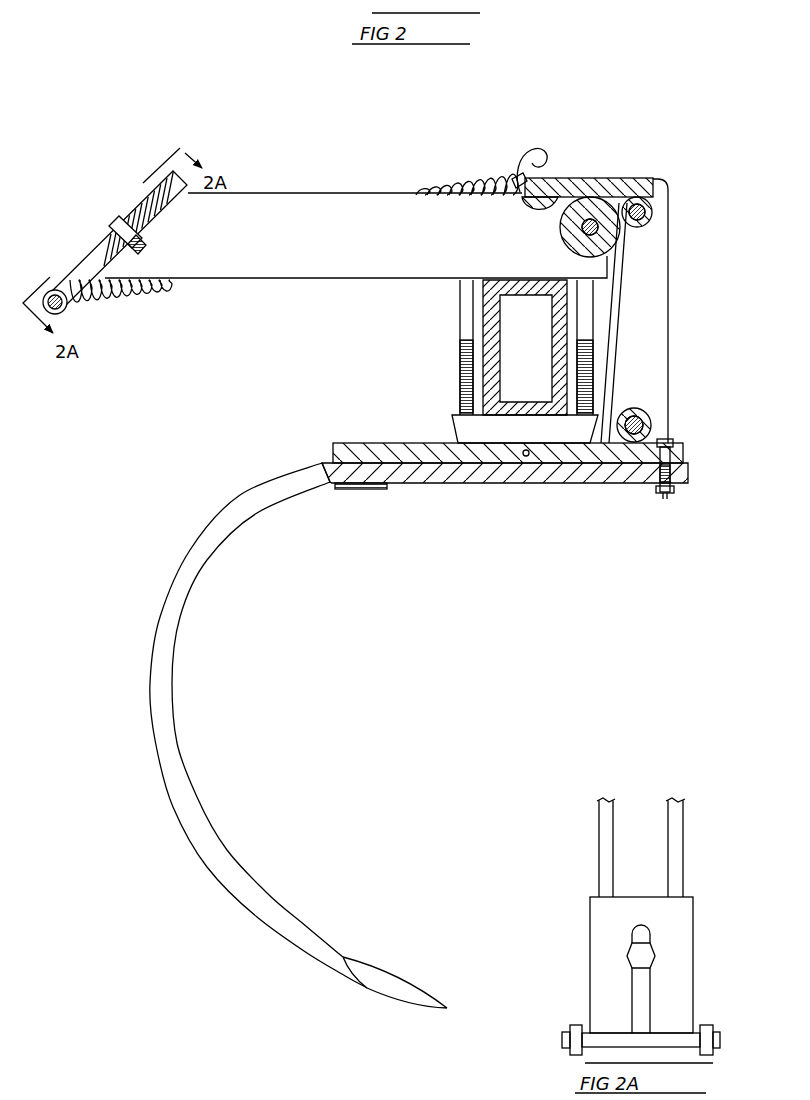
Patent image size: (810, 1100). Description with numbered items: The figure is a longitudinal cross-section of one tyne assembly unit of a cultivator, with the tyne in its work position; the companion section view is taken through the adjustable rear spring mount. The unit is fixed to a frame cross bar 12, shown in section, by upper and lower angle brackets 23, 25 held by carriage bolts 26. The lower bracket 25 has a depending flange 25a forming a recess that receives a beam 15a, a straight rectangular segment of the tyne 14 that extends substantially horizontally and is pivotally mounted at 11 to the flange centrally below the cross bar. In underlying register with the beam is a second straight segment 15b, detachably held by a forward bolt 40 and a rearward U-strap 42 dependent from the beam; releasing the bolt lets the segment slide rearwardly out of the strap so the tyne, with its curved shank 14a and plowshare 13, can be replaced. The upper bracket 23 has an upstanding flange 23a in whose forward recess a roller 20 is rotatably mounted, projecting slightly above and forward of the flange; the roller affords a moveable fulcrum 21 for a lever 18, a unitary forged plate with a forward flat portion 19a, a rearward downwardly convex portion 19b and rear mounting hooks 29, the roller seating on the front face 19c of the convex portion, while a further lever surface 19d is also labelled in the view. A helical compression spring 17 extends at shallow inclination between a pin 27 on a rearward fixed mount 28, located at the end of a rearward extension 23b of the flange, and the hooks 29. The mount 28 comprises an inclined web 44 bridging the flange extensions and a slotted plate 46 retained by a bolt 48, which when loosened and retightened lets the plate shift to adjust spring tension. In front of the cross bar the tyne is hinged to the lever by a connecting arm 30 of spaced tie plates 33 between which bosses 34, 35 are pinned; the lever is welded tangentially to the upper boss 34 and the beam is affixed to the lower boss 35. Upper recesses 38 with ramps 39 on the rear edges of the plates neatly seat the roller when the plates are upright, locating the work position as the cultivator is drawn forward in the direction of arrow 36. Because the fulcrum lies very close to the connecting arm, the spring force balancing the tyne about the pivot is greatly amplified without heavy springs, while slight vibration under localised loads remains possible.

The pivot 11 is at (526, 457).
The cross bar 12 is at (487, 375).
The plowshare 13 is at (403, 987).
The tyne 14 is at (309, 735).
The curved shank 14a is at (172, 632).
The beam 15a is at (357, 452).
The second straight elongate segment 15b is at (438, 477).
The helical compression spring 17 is at (160, 283).
The lever 18 is at (583, 177).
The forward flat portion 19a is at (622, 197).
The rearward downwardly convex portion 19b is at (540, 213).
The front face 19c is at (563, 207).
The cam surface 19d is at (531, 202).
The roller 20 is at (613, 233).
The moveable fulcrum 21 is at (597, 177).
The angle bracket 23 is at (560, 180).
The upstanding flange 23a is at (507, 260).
The rearward extension 23b is at (287, 263).
The angle bracket 25 is at (473, 423).
The depending flange 25a is at (492, 433).
The carriage bolt 26 is at (460, 345).
The pin 27 is at (67, 310).
The rearward fixed mount 28 is at (127, 257).
The rear mounting hook 29 is at (538, 150).
The connecting arm 30 is at (672, 372).
The tie plate 33 is at (655, 332).
The upper boss 34 is at (652, 209).
The lower boss 35 is at (653, 423).
The arrow 36 is at (715, 585).
The upper recess 38 is at (630, 197).
The ramp 39 is at (610, 260).
The forward bolt 40 is at (665, 499).
The U-strap 42 is at (347, 488).
The inclined web 44 is at (167, 212).
The slotted plate 46 is at (153, 200).
The bolt 48 is at (117, 218).